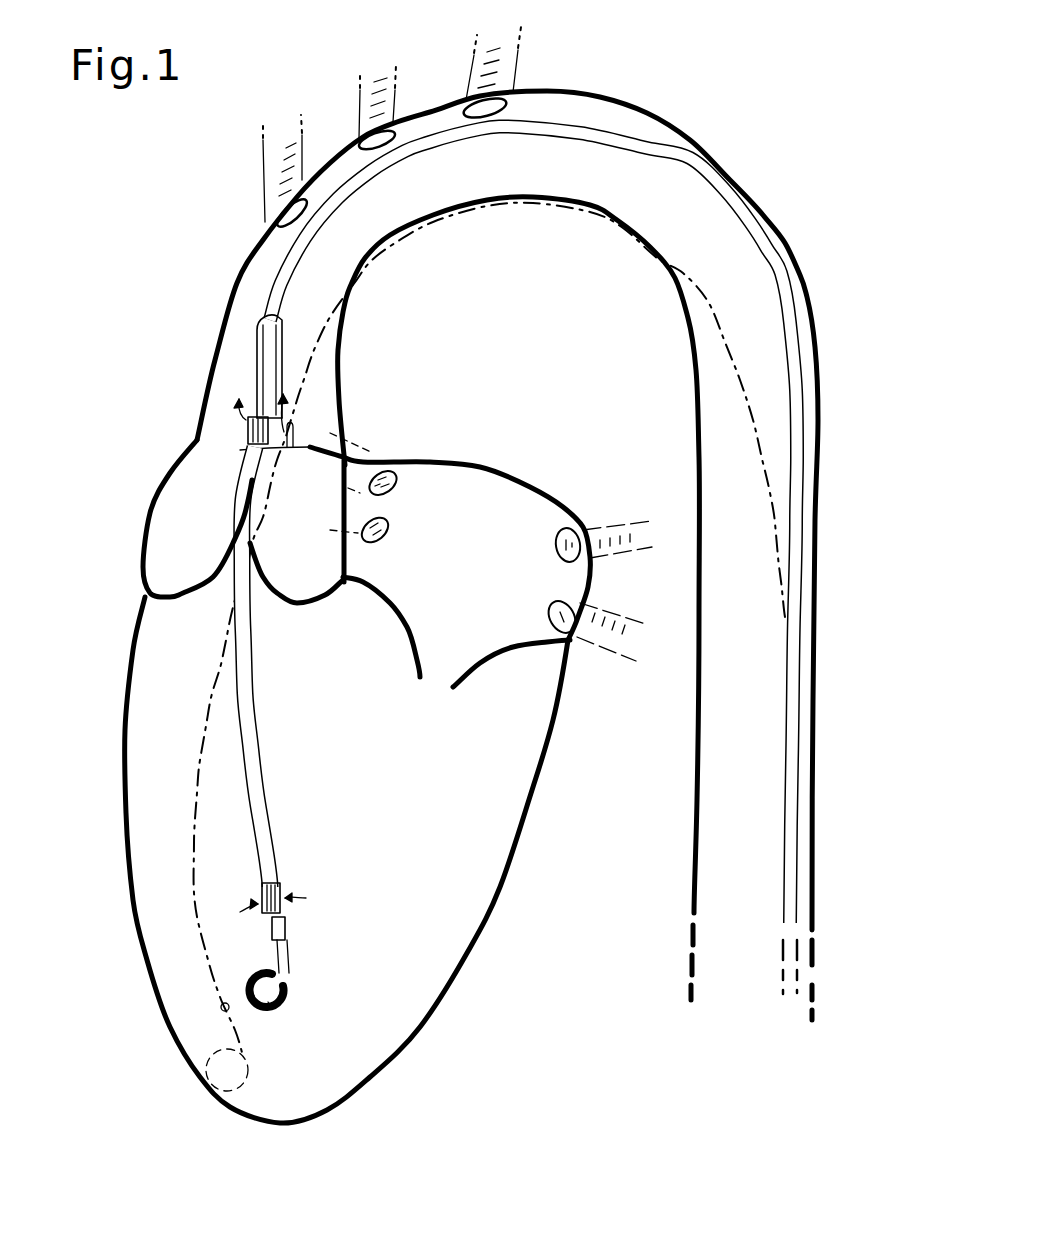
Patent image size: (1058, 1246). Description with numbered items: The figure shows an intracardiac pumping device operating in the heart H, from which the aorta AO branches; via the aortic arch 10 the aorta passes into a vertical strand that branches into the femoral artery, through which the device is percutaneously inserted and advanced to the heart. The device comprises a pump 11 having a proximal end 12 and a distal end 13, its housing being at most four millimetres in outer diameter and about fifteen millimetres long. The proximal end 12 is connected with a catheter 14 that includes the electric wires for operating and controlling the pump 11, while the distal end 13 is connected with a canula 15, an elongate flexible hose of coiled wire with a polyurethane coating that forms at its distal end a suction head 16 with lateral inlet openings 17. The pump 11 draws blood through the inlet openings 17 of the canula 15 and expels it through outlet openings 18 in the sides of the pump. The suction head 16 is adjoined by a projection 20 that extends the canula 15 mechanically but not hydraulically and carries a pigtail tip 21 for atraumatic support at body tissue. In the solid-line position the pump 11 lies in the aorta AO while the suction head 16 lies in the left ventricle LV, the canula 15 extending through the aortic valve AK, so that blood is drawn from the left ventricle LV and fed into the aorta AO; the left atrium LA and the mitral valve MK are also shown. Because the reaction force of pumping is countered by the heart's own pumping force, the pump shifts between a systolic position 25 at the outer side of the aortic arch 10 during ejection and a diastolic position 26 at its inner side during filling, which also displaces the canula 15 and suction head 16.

The aortic arch 10 is at (635, 105).
The pump 11 is at (250, 355).
The proximal end 12 is at (273, 307).
The distal end 13 is at (240, 450).
The catheter 14 is at (578, 128).
The canula 15 is at (256, 703).
The suction head 16 is at (290, 920).
The inlet openings 17 is at (277, 893).
The outlet openings 18 is at (247, 435).
The projection 20 is at (299, 977).
The pigtail tip 21 is at (275, 1007).
The systolic position 25 is at (532, 106).
The diastolic position 26 is at (513, 193).
The aorta AO is at (338, 337).
The left atrium LA is at (487, 582).
The left ventricle LV is at (370, 800).
The aortic valve AK is at (189, 600).
The mitral valve MK is at (488, 663).
The heart H is at (500, 915).